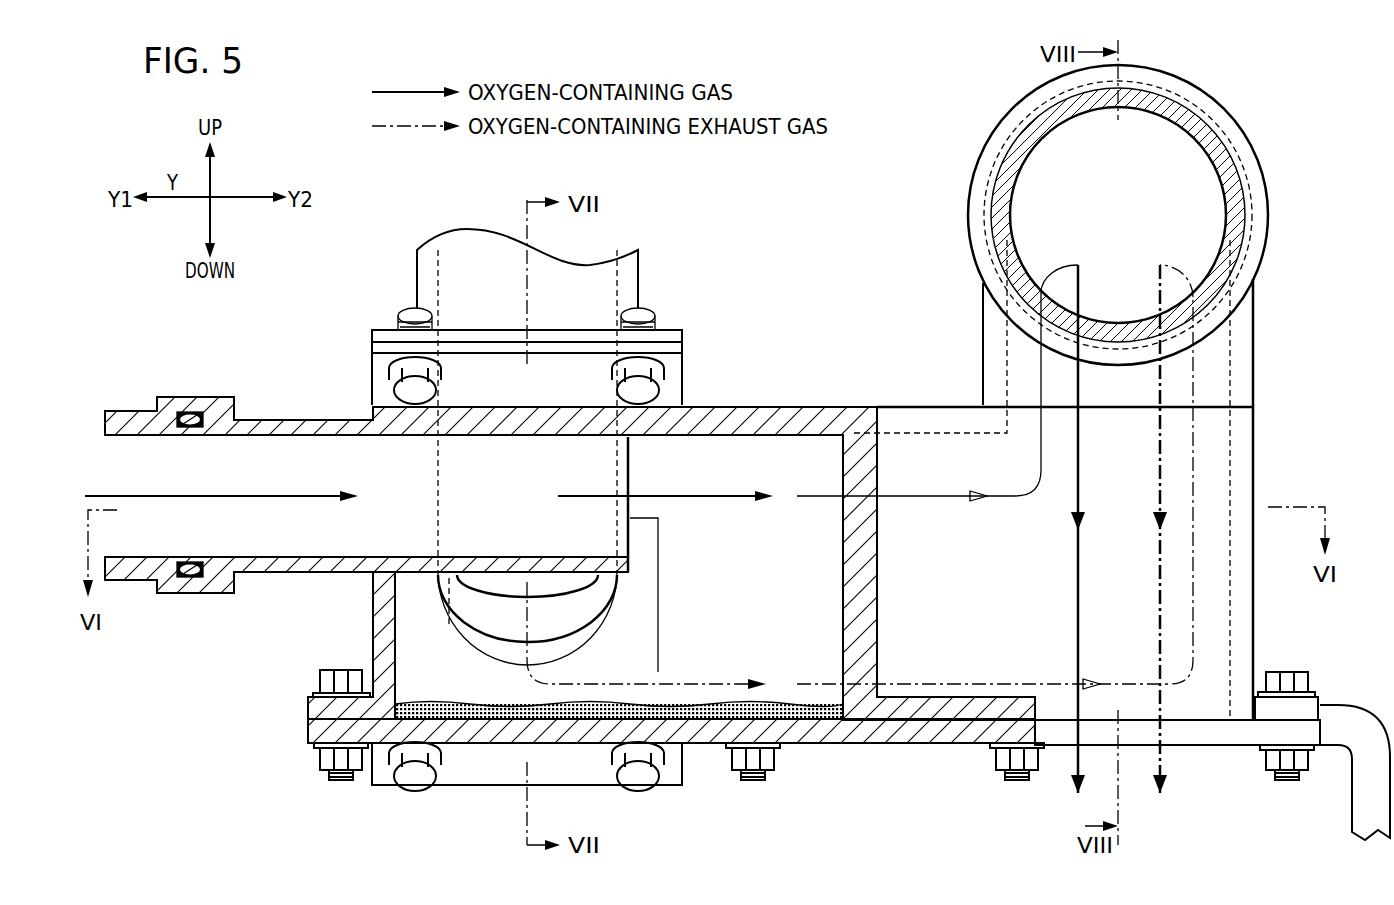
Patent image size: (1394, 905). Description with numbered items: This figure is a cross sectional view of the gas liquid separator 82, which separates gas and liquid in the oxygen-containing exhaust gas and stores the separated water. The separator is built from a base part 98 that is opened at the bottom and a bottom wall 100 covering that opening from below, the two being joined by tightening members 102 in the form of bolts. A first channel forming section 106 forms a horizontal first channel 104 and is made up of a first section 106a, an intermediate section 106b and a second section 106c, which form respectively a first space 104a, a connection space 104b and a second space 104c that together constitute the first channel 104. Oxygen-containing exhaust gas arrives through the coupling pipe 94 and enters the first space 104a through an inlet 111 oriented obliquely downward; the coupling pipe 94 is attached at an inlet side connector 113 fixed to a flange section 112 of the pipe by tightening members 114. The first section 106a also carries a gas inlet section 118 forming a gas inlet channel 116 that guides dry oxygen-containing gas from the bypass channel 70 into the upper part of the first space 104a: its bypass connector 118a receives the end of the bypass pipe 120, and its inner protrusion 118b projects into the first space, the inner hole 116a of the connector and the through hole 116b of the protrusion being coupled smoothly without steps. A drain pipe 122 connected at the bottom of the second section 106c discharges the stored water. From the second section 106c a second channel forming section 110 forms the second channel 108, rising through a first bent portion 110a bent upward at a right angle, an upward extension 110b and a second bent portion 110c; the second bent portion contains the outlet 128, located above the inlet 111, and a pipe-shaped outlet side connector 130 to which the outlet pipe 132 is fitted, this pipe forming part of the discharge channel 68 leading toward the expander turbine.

The gas liquid separator 82 is at (787, 297).
The coupling pipe 94 is at (485, 400).
The discharge channel 68 is at (417, 283).
The base part 98 is at (1245, 662).
The bottom wall 100 is at (1205, 737).
The tightening members 102 is at (323, 758).
The first channel 104 is at (740, 546).
The first space 104a is at (428, 673).
The connection space 104b is at (930, 452).
The second space 104c is at (1222, 575).
The first channel forming section 106 is at (573, 822).
The first section 106a is at (598, 732).
The intermediate section 106b is at (892, 653).
The second section 106c is at (1053, 628).
The second channel 108 is at (1020, 347).
The second channel forming section 110 is at (1325, 165).
The first bent portion 110a is at (1253, 440).
The upward extension 110b is at (1253, 332).
The second bent portion 110c is at (1248, 177).
The inlet 111 is at (502, 645).
The flange section 112 is at (675, 330).
The inlet side connector 113 is at (673, 362).
The tightening members 114 is at (648, 386).
The gas inlet channel 116 is at (357, 626).
The inner hole 116a is at (280, 523).
The through hole 116b is at (457, 513).
The gas inlet section 118 is at (357, 349).
The bypass connector 118a is at (273, 425).
The inner protrusion 118b is at (348, 425).
The bypass pipe 120 is at (366, 474).
The bypass channel 70 is at (135, 423).
The drain pipe 122 is at (1365, 800).
The outlet 128 is at (1067, 130).
The outlet side connector 130 is at (982, 168).
The outlet pipe 132 is at (1197, 123).